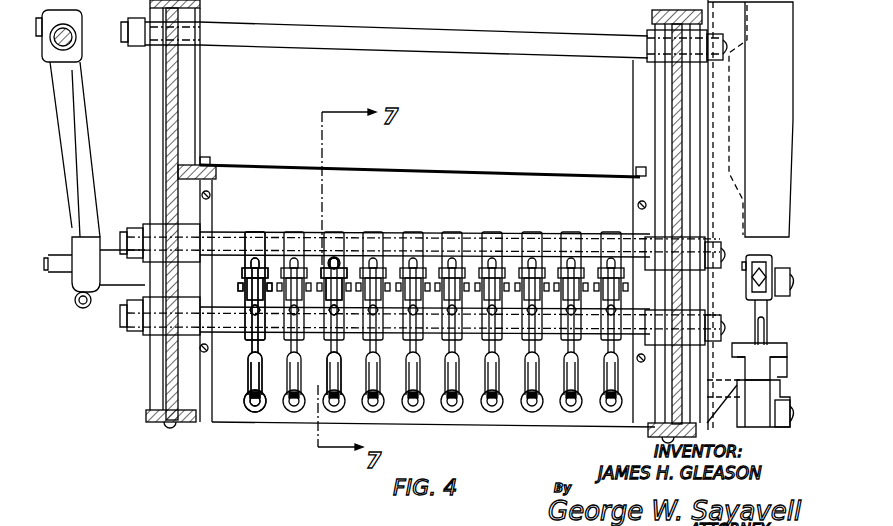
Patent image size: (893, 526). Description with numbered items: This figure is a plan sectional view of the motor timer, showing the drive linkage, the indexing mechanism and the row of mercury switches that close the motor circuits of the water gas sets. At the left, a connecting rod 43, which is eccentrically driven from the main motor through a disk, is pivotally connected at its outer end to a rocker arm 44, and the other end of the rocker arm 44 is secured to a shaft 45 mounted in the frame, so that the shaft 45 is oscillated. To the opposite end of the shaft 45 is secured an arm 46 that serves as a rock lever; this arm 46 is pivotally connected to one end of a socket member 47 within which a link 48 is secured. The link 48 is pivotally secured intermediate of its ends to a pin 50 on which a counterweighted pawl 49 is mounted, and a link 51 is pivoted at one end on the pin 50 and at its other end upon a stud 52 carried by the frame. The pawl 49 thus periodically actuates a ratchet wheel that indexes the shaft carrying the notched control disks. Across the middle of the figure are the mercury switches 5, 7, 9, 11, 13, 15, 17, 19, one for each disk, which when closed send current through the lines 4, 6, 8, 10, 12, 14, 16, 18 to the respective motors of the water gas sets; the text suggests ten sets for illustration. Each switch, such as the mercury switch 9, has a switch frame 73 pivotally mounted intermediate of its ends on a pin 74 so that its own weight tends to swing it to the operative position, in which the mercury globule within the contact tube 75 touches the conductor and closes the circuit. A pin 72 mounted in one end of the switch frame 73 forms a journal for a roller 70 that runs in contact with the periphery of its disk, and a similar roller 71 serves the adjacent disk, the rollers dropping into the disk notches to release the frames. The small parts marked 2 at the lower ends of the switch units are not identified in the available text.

The roller 2 is at (262, 400).
The line 4 is at (261, 408).
The switch 5 is at (250, 410).
The line 6 is at (299, 408).
The switch 7 is at (290, 410).
The line 8 is at (341, 408).
The mercury switch 9 is at (330, 430).
The line 10 is at (382, 407).
The switch 11 is at (378, 412).
The line 12 is at (422, 407).
The switch 13 is at (418, 412).
The line 14 is at (461, 407).
The switch 15 is at (457, 412).
The line 16 is at (501, 407).
The switch 17 is at (497, 412).
The line 18 is at (541, 407).
The switch 19 is at (537, 412).
The connecting rod 43 is at (77, 42).
The rocker arm 44 is at (64, 170).
The shaft 45 is at (113, 254).
The arm 46 is at (753, 254).
The socket member 47 is at (782, 252).
The link 48 is at (776, 326).
The counterweighted pawl 49 is at (755, 330).
The pin 50 is at (788, 328).
The link 51 is at (775, 395).
The stud 52 is at (730, 390).
The roller 70 is at (340, 262).
The roller 71 is at (346, 272).
The pin 72 is at (330, 266).
The switch frame 73 is at (337, 318).
The pin 74 is at (330, 296).
The contact tube 75 is at (328, 370).